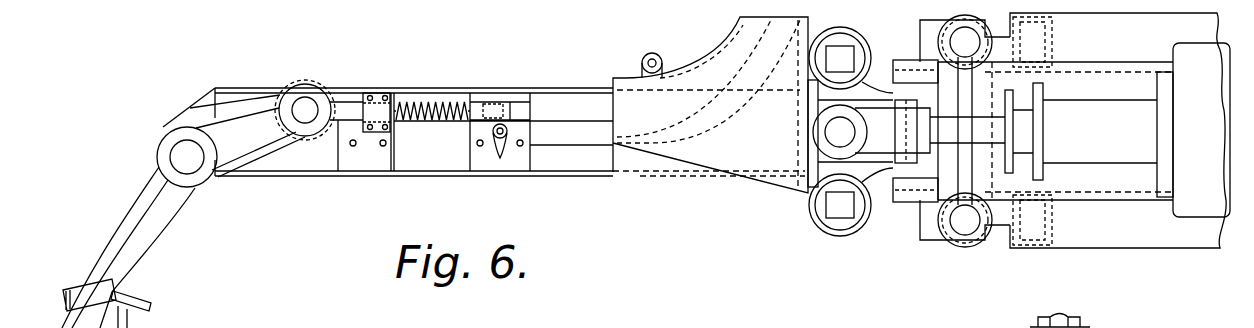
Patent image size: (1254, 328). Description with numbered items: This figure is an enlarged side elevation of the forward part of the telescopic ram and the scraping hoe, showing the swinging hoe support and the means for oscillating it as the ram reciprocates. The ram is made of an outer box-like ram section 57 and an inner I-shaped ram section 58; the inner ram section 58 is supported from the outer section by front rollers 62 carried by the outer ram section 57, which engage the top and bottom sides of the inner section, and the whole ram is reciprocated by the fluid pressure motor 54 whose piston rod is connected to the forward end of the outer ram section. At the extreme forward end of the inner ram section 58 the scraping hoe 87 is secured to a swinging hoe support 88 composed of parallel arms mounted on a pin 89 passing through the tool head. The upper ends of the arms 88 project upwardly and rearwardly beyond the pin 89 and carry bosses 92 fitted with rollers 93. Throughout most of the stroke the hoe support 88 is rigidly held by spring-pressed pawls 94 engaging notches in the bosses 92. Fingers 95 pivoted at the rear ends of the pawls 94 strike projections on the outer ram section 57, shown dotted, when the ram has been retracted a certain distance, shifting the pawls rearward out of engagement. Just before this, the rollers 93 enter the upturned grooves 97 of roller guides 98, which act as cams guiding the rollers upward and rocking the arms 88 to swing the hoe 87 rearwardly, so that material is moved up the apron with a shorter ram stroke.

The ram operating fluid pressure motor 54 is at (1084, 130).
The outer box-like ram section 57 is at (912, 198).
The inner I-shaped ram section 58 is at (642, 171).
The front rollers 62 is at (826, 231).
The scraping hoe 87 is at (131, 301).
The swinging hoe support 88 is at (134, 215).
The pivot pin 89 is at (181, 149).
The bosses 92 is at (316, 98).
The rollers 93 is at (302, 128).
The pawls 94 is at (353, 115).
The pivoted fingers 95 is at (545, 184).
The upturned grooves or slots 97 is at (660, 58).
The roller guides 98 is at (730, 160).